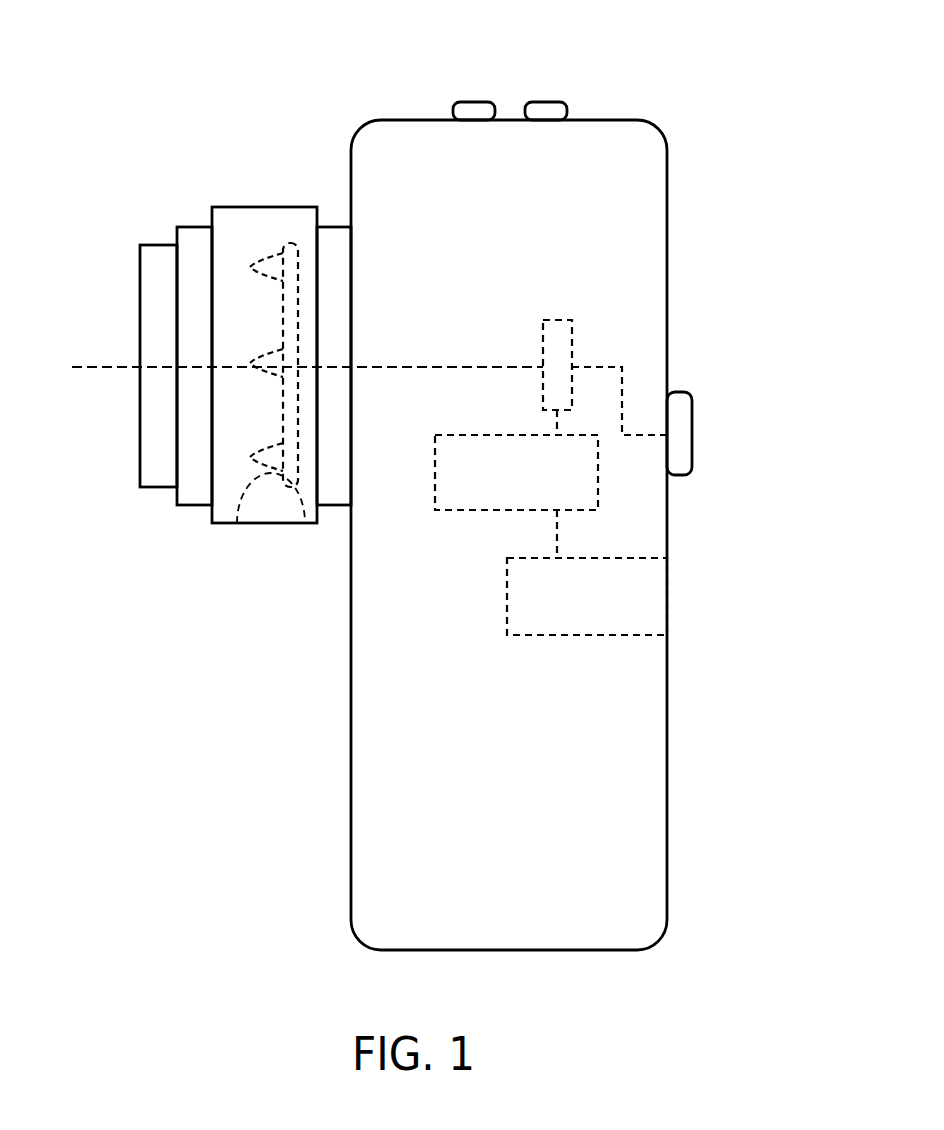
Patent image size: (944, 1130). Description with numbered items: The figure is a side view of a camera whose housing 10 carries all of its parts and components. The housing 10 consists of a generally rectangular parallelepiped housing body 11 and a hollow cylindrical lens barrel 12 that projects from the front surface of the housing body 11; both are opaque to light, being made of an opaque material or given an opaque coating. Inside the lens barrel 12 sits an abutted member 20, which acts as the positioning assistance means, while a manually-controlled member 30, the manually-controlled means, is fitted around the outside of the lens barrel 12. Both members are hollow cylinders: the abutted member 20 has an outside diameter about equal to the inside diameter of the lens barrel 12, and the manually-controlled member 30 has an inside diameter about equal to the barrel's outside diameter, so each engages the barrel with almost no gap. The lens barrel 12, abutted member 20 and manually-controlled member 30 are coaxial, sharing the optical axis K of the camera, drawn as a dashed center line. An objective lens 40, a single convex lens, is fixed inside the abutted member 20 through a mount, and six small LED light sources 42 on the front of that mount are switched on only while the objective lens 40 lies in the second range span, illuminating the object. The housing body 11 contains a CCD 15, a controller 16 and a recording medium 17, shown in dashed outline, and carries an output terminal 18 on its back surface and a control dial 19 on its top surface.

The housing 10 is at (577, 521).
The housing body 11 is at (662, 775).
The lens barrel 12 is at (192, 243).
The CCD 15 is at (567, 328).
The controller 16 is at (598, 495).
The recording medium 17 is at (642, 613).
The output terminal 18 is at (687, 430).
The control dial 19 is at (478, 110).
The abutted member 20 is at (148, 264).
The manually-controlled member 30 is at (220, 480).
The objective lens 40 is at (312, 293).
The light sources 42 is at (242, 527).
The optical axis K is at (100, 367).